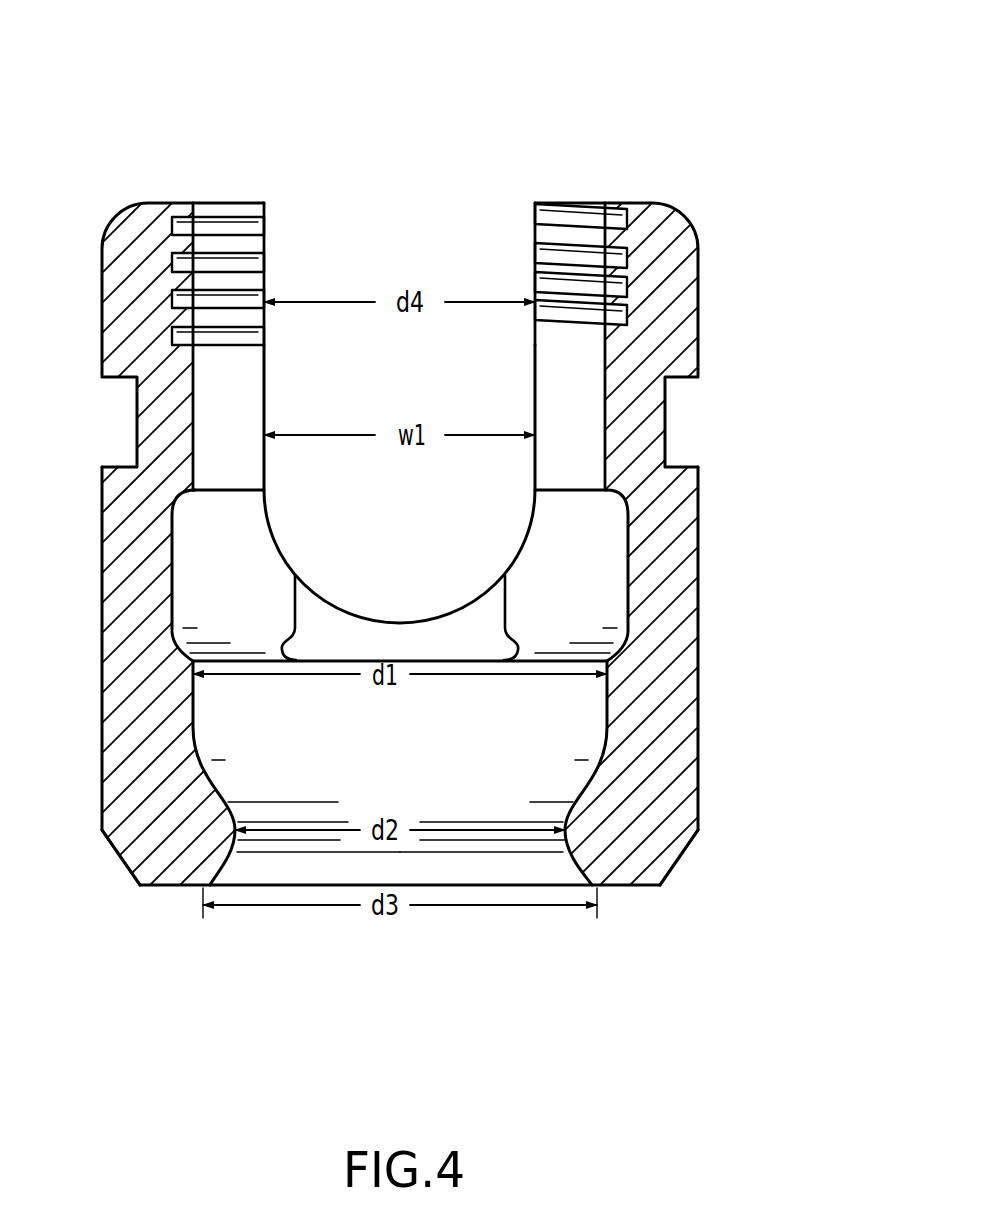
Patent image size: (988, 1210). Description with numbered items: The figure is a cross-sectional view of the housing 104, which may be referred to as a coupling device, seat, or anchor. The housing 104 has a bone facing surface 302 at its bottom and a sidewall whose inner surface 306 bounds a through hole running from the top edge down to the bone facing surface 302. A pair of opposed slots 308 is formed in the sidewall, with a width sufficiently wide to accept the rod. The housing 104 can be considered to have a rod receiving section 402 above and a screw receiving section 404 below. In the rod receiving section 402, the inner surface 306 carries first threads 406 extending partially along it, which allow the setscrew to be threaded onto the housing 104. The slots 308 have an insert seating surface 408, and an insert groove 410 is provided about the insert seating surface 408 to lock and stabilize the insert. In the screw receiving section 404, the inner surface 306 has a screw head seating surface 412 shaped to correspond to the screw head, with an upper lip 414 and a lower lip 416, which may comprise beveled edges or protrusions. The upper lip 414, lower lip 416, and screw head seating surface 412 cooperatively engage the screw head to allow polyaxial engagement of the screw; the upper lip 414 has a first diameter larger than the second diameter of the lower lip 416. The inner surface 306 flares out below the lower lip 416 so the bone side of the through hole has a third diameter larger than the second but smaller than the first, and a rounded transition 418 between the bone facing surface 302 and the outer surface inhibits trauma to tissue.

The housing 104 is at (117, 102).
The bone facing surface 302 is at (622, 887).
The inner surface 306 is at (587, 390).
The slots 308 is at (322, 214).
The rod receiving section 402 is at (779, 262).
The screw receiving section 404 is at (724, 750).
The first threads 406 is at (622, 233).
The insert seating surface 408 is at (347, 614).
The insert groove 410 is at (608, 550).
The screw head seating surface 412 is at (230, 775).
The upper lip 414 is at (193, 663).
The lower lip 416 is at (565, 830).
The rounded transition 418 is at (140, 889).